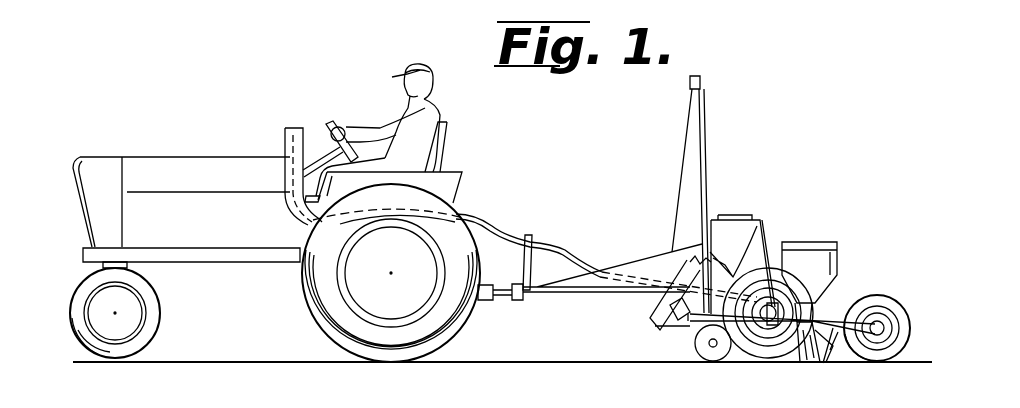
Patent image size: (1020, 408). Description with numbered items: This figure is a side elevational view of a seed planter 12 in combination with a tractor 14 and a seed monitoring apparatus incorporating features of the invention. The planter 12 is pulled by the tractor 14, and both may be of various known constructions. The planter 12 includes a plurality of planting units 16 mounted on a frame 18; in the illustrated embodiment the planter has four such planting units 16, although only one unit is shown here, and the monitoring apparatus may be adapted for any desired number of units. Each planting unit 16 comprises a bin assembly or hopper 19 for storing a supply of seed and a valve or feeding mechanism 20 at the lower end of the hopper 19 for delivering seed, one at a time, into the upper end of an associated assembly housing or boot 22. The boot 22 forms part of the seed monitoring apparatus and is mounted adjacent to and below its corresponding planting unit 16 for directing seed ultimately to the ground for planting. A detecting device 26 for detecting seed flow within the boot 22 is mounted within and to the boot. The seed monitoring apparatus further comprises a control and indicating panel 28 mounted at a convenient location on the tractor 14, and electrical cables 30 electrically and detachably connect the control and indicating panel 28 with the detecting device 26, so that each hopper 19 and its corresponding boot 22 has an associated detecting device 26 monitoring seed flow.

The planter 12 is at (727, 197).
The tractor 14 is at (190, 157).
The planting unit 16 is at (852, 270).
The frame 18 is at (688, 332).
The bin assembly or hopper 19 is at (833, 257).
The valve or feeding mechanism 20 is at (880, 291).
The assembly housing or boot 22 is at (818, 352).
The detecting device 26 is at (793, 360).
The control and indicating panel 28 is at (302, 128).
The electrical cables 30 is at (493, 225).